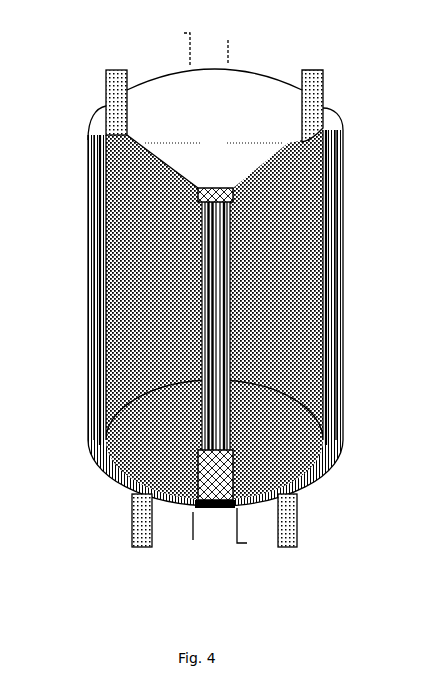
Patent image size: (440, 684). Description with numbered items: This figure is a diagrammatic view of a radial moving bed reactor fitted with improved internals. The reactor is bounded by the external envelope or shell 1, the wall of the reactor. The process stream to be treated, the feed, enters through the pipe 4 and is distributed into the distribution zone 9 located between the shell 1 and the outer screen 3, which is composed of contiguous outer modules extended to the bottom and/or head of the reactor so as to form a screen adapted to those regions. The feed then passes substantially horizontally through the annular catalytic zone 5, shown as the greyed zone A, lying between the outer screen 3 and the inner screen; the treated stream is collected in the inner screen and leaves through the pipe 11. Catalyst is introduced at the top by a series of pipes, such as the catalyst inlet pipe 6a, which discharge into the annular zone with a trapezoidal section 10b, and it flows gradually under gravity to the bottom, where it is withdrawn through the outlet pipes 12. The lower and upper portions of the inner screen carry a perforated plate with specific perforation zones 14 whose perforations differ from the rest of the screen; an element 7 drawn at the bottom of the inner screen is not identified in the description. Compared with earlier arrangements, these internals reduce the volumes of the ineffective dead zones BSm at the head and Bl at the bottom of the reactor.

The external envelope or shell 1 is at (88, 152).
The outer screen 3 is at (88, 255).
The pipe 4 is at (207, 35).
The annular catalytic zone 5 is at (130, 315).
The electrode rod 6a is at (320, 88).
The bottom plate 7 is at (193, 512).
The distribution zone 9 is at (332, 217).
The annular zone with a trapezoidal section 10b is at (323, 108).
The pipe 11 is at (213, 530).
The outlet pipes 12 is at (285, 543).
The specific perforation zones 14 is at (233, 193).
The greyed zone A is at (160, 401).
The dead zone at the head BSm is at (114, 130).
The dead zone at the bottom Bl is at (251, 507).